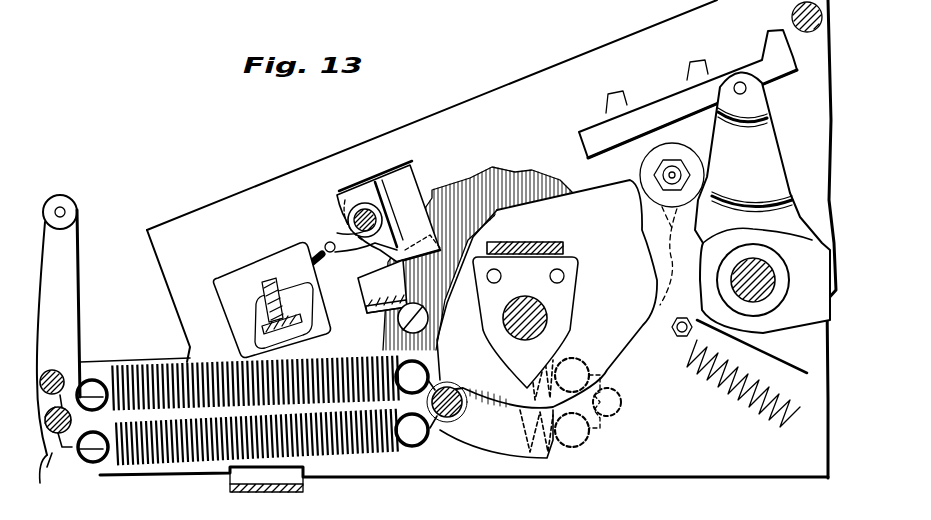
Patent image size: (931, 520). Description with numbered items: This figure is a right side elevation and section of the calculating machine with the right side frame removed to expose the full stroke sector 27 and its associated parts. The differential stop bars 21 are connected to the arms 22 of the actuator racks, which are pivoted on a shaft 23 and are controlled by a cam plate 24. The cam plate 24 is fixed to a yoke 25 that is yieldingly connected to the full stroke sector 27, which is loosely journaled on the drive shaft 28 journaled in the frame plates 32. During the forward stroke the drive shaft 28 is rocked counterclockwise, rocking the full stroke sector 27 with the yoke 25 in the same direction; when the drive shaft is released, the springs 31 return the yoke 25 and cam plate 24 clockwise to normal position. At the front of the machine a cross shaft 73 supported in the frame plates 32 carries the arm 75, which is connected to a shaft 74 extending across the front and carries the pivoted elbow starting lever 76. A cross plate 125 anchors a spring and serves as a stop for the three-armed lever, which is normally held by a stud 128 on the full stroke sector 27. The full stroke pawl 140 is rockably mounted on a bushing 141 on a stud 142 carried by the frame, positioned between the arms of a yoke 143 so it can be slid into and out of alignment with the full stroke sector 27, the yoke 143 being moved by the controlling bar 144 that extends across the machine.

The differential stop bars 21 is at (640, 113).
The arms 22 is at (767, 147).
The shaft 23 is at (770, 280).
The cam plate 24 is at (628, 340).
The yoke 25 is at (553, 242).
The full stroke sector 27 is at (482, 175).
The drive shaft 28 is at (540, 308).
The springs 31 is at (358, 364).
The frame plates 32 is at (472, 103).
The cross shaft 73 is at (48, 455).
The shaft 74 is at (60, 375).
The arm 75 is at (65, 318).
The starting lever 76 is at (177, 358).
The cross plate 125 is at (267, 302).
The stud 128 is at (427, 311).
The full stroke pawl 140 is at (395, 247).
The bushing 141 is at (352, 219).
The stud 142 is at (327, 246).
The yoke 143 is at (337, 205).
The controlling bar 144 is at (365, 290).